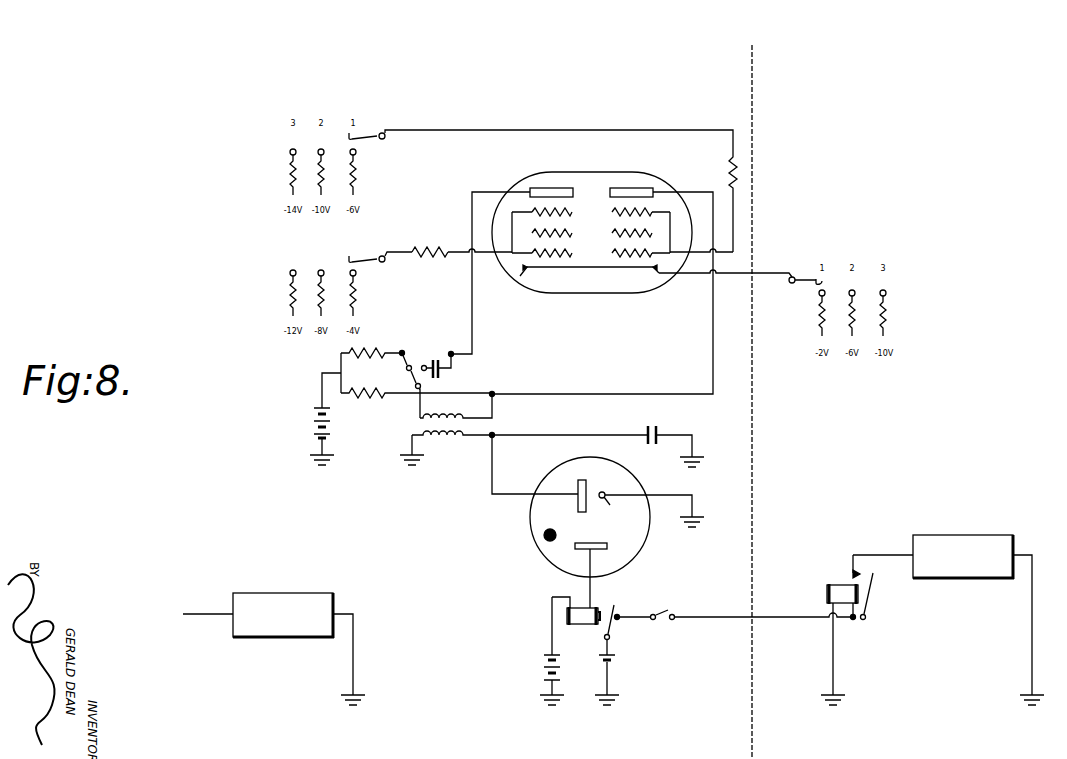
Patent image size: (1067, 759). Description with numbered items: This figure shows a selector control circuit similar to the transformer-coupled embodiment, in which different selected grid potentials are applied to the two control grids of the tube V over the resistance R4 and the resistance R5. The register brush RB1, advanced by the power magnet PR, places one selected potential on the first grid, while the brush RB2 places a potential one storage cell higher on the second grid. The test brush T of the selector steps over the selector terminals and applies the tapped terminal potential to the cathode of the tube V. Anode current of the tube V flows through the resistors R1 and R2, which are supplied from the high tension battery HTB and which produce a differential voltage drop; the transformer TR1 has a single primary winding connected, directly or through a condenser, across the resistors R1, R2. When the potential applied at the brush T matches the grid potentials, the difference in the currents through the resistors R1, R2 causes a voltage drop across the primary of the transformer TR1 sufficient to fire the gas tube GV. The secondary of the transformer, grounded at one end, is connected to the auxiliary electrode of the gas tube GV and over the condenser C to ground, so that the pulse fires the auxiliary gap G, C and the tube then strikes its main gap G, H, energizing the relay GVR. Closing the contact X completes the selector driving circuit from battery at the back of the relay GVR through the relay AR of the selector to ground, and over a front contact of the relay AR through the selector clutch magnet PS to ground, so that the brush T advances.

The register brush RB2 is at (366, 131).
The register brush RB1 is at (364, 254).
The resistance R4 is at (430, 243).
The resistance R5 is at (720, 172).
The tube V is at (592, 220).
The test brush T is at (803, 278).
The resistor R1 is at (371, 362).
The resistor R2 is at (416, 402).
The high tension battery HTB is at (440, 539).
The transformer TR1 is at (466, 414).
The condenser C is at (634, 471).
The gas tube GV is at (590, 505).
The gas tube electrode G is at (577, 502).
The main gap electrode H is at (595, 550).
The relay GVR is at (577, 598).
The contact X is at (640, 622).
The selector relay AR is at (839, 586).
The selector clutch magnet PS is at (963, 557).
The power magnet PR is at (283, 615).